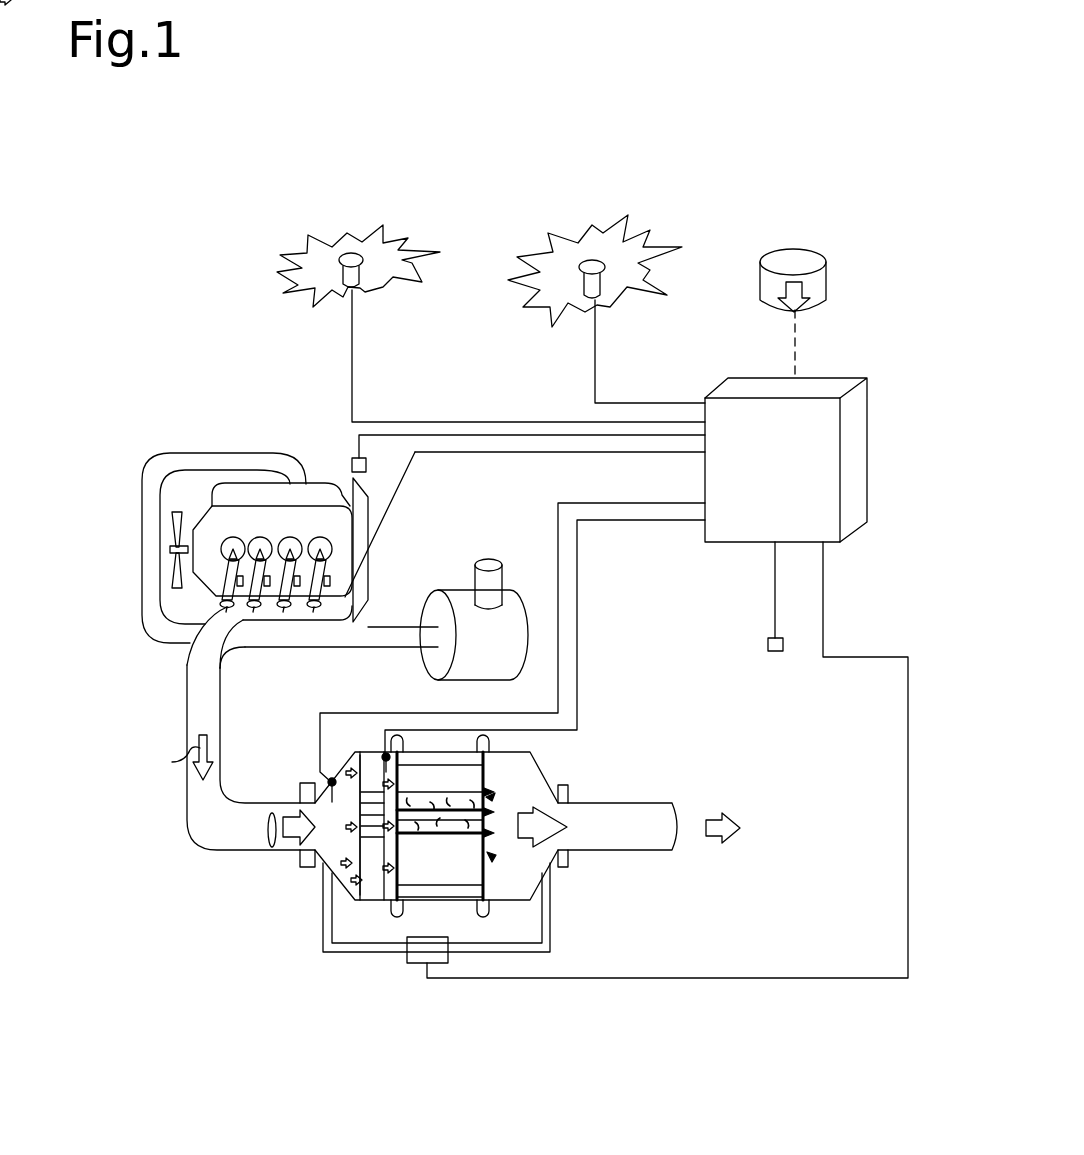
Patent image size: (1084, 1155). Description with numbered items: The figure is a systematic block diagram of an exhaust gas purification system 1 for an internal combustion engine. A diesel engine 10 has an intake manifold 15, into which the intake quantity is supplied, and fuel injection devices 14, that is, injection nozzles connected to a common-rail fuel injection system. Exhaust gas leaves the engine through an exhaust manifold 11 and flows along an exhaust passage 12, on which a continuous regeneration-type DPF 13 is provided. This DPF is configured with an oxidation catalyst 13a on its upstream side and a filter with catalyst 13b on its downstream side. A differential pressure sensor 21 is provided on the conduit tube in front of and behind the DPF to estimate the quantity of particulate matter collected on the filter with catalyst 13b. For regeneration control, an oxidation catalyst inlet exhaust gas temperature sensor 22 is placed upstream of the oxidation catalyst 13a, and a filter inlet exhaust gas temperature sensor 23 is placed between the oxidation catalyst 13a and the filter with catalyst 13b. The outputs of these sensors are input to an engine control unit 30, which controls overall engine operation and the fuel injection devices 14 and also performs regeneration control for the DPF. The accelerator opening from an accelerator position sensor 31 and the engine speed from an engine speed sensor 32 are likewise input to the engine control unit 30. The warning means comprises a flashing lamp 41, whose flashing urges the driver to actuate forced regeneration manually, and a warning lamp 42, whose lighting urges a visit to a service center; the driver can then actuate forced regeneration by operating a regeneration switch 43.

The exhaust gas purification system 1 is at (725, 287).
The diesel engine 10 is at (205, 505).
The exhaust manifold 11 is at (222, 607).
The exhaust passage 12 is at (217, 845).
The continuous regeneration-type DPF 13 is at (560, 762).
The oxidation catalyst 13a is at (372, 870).
The filter with catalyst 13b is at (452, 865).
The fuel injection devices 14 is at (230, 567).
The intake manifold 15 is at (305, 495).
The differential pressure sensor 21 is at (422, 952).
The oxidation catalyst inlet exhaust gas temperature sensor 22 is at (330, 780).
The filter inlet exhaust gas temperature sensor 23 is at (383, 752).
The engine control unit 30 is at (862, 452).
The accelerator position sensor 31 is at (778, 652).
The engine speed sensor 32 is at (353, 458).
The flashing lamp 41 is at (354, 253).
The warning lamp 42 is at (595, 260).
The regeneration switch 43 is at (808, 262).